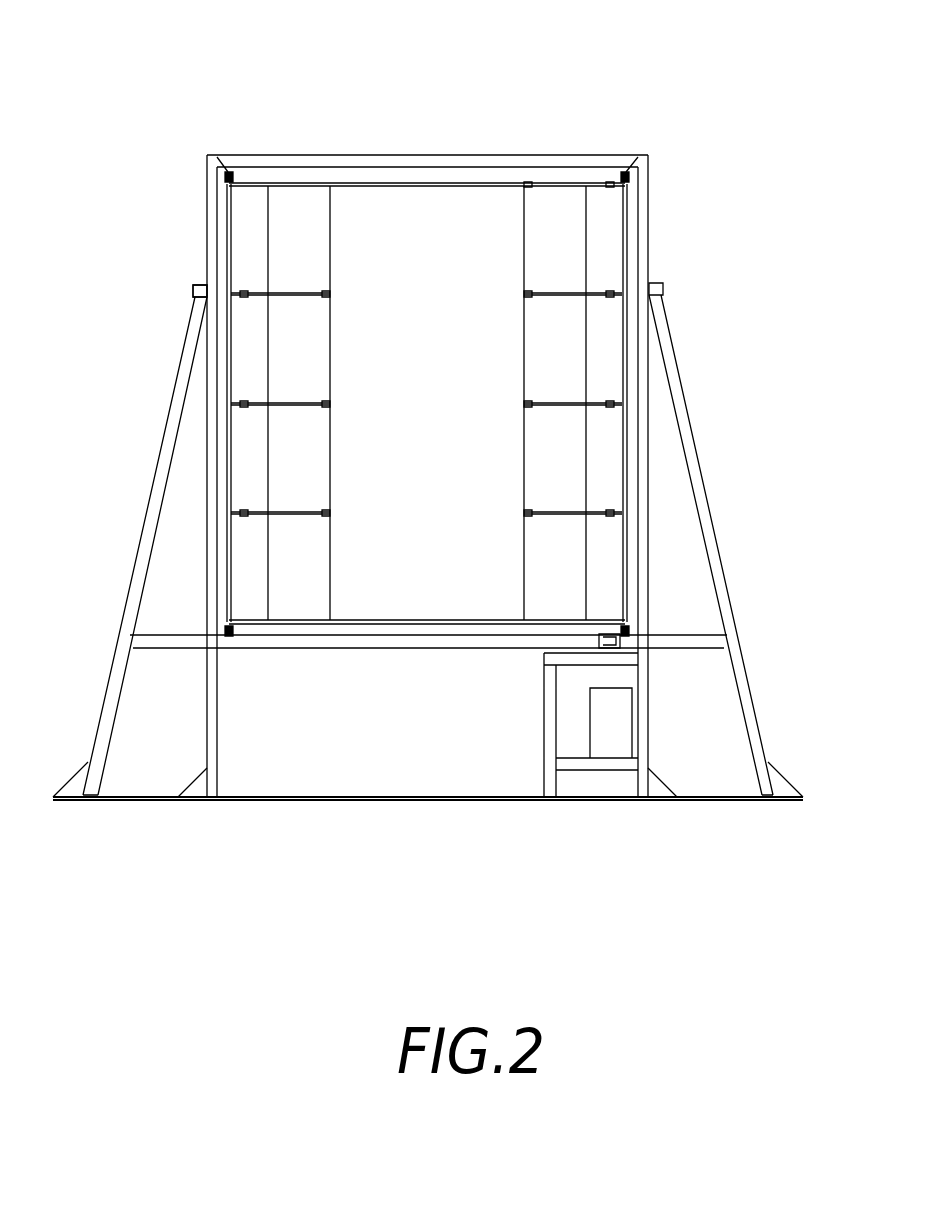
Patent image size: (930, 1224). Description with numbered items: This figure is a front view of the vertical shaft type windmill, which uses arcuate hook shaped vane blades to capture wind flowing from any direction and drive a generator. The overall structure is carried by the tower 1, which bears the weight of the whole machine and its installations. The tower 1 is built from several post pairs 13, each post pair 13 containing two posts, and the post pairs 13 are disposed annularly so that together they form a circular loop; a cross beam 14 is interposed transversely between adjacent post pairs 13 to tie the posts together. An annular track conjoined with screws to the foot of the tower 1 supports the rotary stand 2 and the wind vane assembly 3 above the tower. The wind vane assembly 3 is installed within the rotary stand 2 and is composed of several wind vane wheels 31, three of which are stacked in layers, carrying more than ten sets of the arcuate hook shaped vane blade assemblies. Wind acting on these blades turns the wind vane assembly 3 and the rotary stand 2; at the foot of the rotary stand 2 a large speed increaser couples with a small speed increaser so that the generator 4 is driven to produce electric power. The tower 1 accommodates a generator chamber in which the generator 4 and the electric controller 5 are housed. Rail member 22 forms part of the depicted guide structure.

The tower 1 is at (444, 474).
The post pair 13 is at (642, 469).
The cross beam 14 is at (612, 160).
The rotary stand 2 is at (540, 295).
The guide rail 22 is at (523, 183).
The wind vane assembly 3 is at (300, 238).
The wind vane wheel 31 is at (263, 323).
The generator 4 is at (600, 648).
The electric controller 5 is at (613, 742).